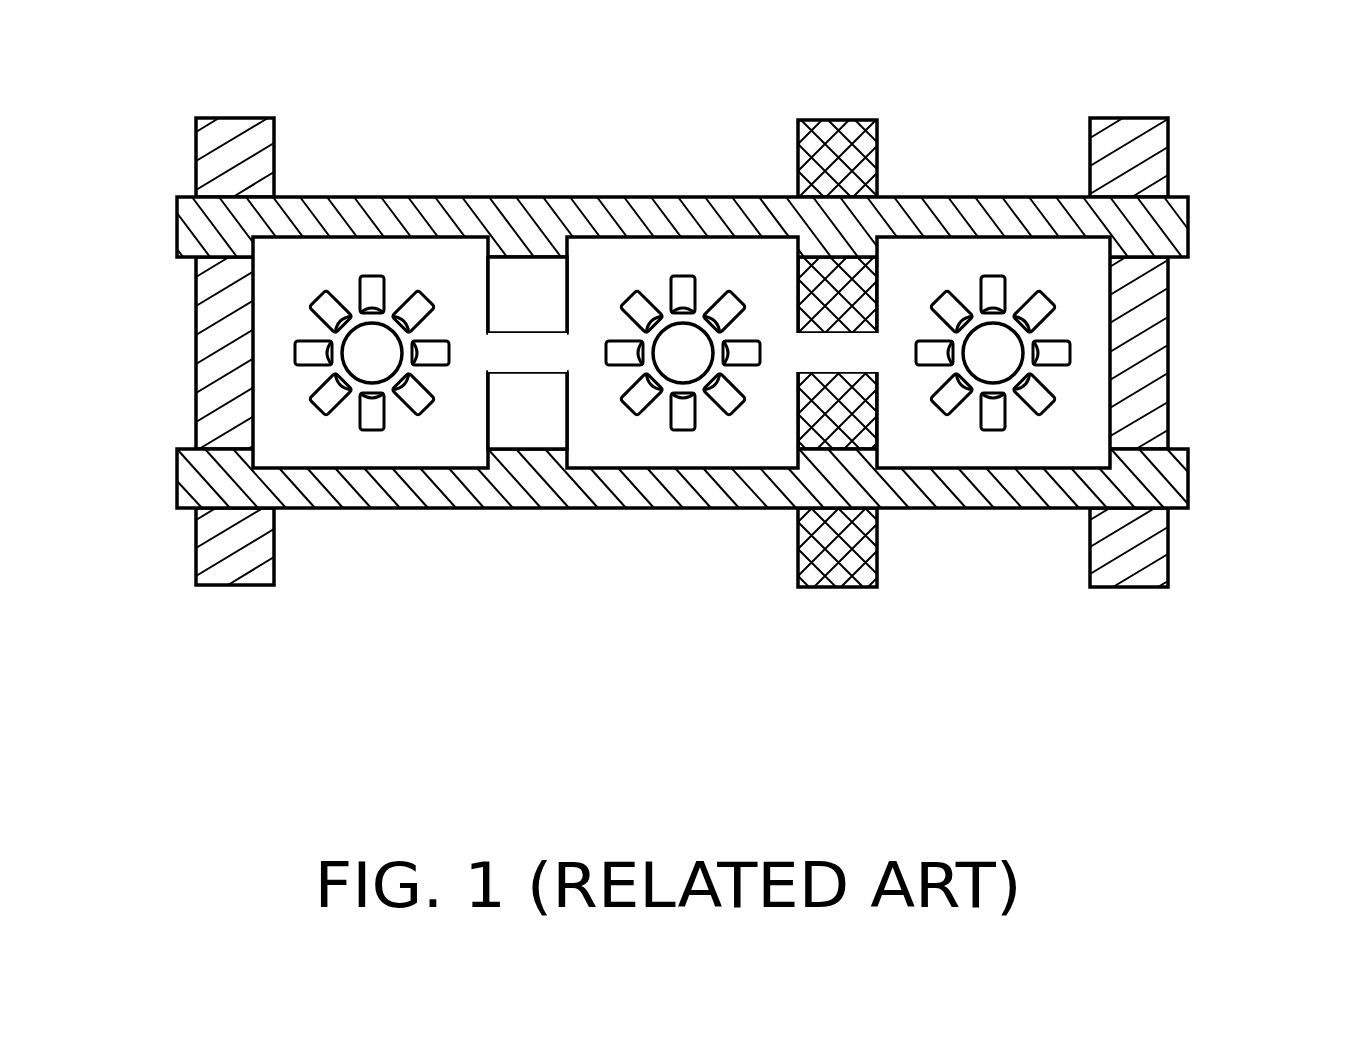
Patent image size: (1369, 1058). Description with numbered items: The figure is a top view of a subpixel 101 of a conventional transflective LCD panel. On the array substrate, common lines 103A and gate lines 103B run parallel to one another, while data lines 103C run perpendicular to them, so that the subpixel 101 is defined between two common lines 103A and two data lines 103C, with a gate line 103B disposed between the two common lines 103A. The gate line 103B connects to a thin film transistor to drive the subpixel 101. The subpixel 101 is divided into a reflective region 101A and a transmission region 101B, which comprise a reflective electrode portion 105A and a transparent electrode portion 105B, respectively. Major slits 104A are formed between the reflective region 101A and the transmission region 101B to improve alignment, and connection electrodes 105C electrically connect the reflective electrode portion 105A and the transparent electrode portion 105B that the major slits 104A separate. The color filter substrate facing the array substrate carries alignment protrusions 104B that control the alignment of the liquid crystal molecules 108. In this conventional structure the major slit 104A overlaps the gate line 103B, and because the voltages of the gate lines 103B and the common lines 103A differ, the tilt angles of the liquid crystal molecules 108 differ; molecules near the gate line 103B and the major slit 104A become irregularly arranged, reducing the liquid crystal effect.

The subpixel 101 is at (382, 750).
The reflective region 101A is at (873, 670).
The transmission region 101B is at (273, 670).
The common line 103A is at (238, 552).
The gate line 103B is at (842, 552).
The data line 103C is at (1172, 226).
The major slit 104A is at (528, 432).
The alignment protrusion 104B is at (372, 355).
The reflective electrode portion 105A is at (993, 257).
The transparent electrode portion 105B is at (372, 257).
The connection electrode 105C is at (527, 350).
The liquid crystal molecule 108 is at (308, 352).